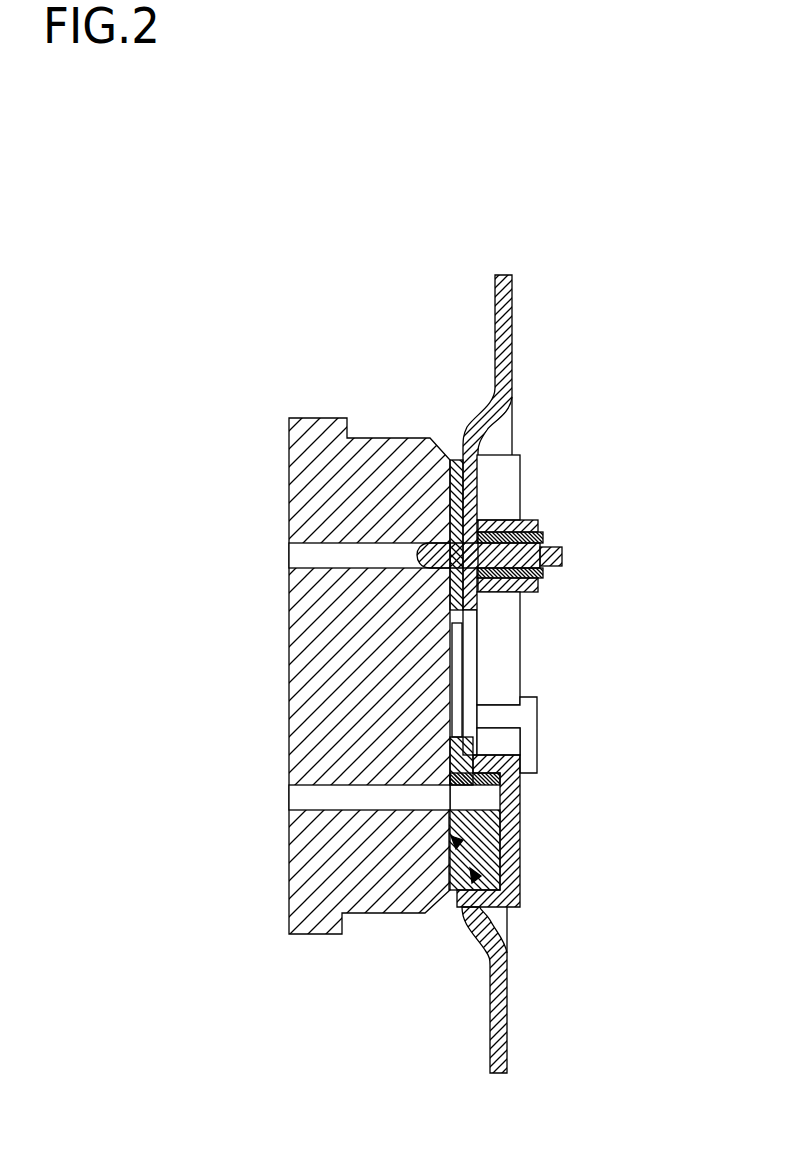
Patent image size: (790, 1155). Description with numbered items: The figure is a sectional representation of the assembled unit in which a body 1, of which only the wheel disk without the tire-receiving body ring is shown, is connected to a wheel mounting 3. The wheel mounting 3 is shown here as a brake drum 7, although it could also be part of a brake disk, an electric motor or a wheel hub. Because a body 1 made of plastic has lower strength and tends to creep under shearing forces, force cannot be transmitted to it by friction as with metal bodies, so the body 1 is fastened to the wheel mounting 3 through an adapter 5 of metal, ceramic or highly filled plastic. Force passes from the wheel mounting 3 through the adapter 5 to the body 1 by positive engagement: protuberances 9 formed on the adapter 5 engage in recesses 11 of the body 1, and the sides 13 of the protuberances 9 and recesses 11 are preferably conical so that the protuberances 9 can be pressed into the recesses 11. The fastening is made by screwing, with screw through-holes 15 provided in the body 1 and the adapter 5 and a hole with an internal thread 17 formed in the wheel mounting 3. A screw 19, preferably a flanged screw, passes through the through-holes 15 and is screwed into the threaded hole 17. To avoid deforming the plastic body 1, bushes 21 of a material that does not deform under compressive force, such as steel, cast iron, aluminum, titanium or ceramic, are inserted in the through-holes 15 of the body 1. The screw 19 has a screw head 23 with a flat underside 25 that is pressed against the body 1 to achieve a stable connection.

The body 1 is at (512, 330).
The wheel mounting 3 is at (444, 871).
The adapter 5 is at (452, 893).
The brake drum 7 is at (306, 630).
The protuberances 9 is at (520, 876).
The recesses 11 is at (520, 864).
The sides 13 is at (505, 752).
The screw through-holes 15 is at (496, 512).
The hole with an internal thread 17 is at (440, 542).
The screw 19 is at (536, 519).
The bushes 21 is at (543, 578).
The screw head 23 is at (562, 558).
The flat underside 25 is at (545, 537).